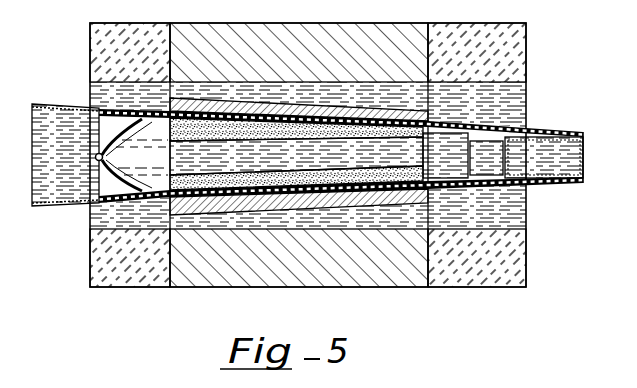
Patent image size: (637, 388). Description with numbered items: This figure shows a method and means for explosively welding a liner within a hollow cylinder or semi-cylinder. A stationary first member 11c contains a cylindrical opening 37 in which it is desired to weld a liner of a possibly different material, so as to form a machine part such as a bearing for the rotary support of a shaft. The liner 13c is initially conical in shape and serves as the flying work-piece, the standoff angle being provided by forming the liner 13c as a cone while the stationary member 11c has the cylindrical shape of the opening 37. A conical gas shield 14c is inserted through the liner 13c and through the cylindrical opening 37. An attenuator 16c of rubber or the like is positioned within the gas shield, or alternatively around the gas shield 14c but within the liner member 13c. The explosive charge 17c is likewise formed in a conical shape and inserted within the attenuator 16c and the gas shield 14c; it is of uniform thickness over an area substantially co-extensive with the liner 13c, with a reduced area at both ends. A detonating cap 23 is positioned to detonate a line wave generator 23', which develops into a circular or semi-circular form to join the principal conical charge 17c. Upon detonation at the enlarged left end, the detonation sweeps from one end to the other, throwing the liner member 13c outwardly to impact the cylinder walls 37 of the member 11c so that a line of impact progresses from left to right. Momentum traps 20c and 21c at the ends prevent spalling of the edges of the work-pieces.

The first member 11c is at (385, 287).
The liner 13c is at (214, 100).
The conical gas shield 14c is at (563, 131).
The attenuator 16c is at (373, 190).
The explosive charge 17c is at (205, 175).
The momentum trap 20c is at (90, 258).
The momentum trap 21c is at (526, 253).
The detonating cap 23 is at (78, 161).
The line wave generator 23' is at (135, 155).
The cylindrical opening 37 is at (366, 86).